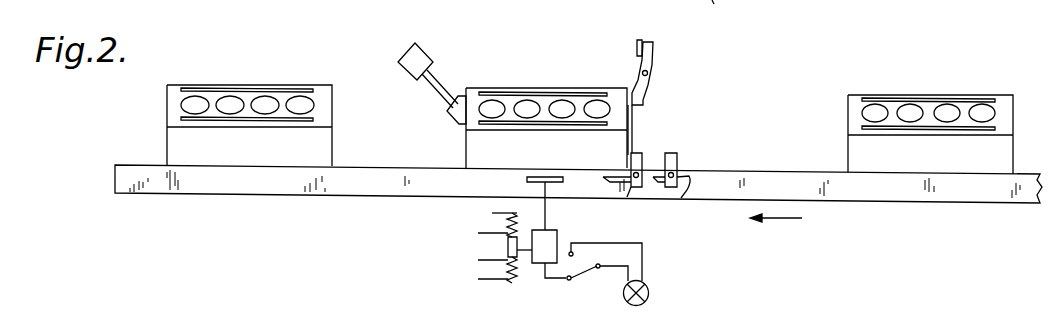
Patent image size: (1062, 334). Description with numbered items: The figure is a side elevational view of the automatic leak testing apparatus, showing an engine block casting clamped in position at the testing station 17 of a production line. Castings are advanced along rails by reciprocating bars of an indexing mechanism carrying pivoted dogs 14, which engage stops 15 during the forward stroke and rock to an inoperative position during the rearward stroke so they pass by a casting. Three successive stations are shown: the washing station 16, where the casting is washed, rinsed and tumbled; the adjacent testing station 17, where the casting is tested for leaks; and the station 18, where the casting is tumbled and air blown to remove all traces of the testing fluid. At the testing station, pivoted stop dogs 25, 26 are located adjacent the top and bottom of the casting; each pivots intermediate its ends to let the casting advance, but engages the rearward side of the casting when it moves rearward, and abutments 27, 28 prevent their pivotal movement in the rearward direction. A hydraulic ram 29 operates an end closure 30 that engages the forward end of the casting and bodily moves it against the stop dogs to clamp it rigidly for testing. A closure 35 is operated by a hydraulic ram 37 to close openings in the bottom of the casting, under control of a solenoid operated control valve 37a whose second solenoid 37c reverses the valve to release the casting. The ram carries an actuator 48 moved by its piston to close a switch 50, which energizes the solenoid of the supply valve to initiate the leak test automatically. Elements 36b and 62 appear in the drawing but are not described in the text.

The dogs 14 is at (681, 199).
The stops 15 is at (657, 190).
The washing station 16 is at (934, 75).
The testing station 17 is at (550, 68).
The station 18 is at (252, 75).
The pivoted stop dog 25 is at (653, 66).
The pivoted stop dog 26 is at (627, 197).
The abutment 27 is at (637, 48).
The abutment 28 is at (611, 177).
The hydraulic ram 29 is at (421, 54).
The end closure 30 is at (455, 113).
The closure 35 is at (538, 173).
The spring 36b is at (518, 284).
The hydraulic ram 37 is at (549, 243).
The solenoid operated control valve 37a is at (508, 247).
The solenoid 37c is at (492, 213).
The actuator 48 is at (553, 282).
The switch 50 is at (585, 273).
The signal lamp 62 is at (648, 291).